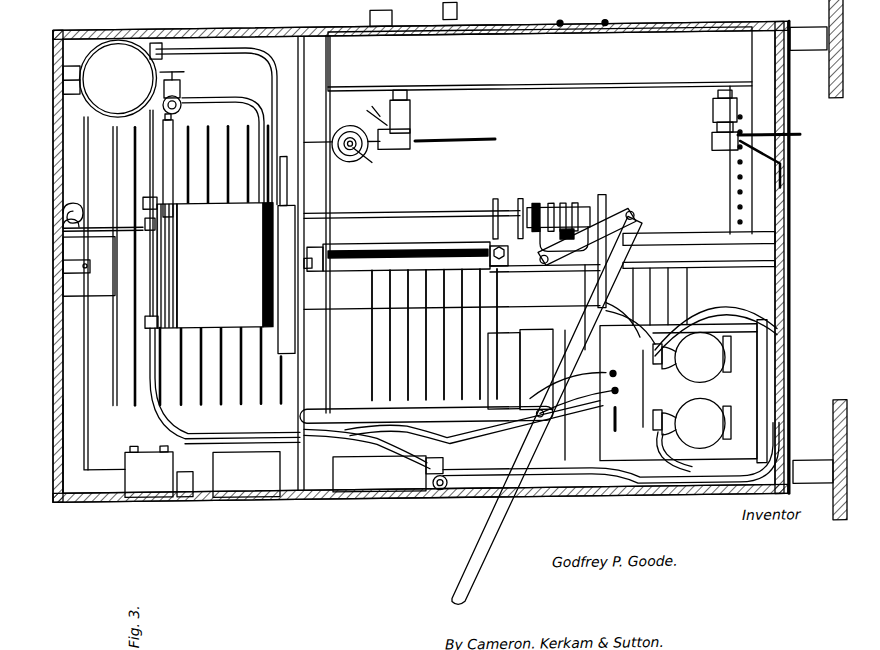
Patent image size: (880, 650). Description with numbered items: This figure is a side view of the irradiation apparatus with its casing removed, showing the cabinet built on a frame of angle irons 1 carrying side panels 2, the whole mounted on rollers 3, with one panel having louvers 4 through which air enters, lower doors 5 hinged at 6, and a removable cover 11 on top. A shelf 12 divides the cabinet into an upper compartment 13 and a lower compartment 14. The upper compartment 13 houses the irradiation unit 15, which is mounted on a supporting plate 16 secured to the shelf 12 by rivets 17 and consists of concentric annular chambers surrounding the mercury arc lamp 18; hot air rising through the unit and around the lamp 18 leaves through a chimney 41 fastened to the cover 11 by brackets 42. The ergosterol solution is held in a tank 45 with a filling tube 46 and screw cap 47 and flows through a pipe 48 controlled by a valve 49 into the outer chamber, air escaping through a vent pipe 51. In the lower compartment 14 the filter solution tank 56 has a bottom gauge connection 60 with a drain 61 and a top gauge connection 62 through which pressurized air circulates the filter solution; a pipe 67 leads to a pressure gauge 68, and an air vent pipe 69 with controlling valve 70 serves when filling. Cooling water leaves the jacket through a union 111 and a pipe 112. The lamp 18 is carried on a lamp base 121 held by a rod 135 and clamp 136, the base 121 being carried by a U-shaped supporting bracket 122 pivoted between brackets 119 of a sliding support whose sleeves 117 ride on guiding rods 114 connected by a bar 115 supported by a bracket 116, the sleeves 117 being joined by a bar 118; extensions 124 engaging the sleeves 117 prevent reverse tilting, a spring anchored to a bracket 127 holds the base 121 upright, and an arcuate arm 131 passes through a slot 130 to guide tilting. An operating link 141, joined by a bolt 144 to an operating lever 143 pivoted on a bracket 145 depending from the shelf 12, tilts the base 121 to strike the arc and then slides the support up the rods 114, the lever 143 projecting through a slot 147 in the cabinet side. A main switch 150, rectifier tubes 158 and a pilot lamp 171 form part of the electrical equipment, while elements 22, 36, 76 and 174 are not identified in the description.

The angle irons 1 is at (89, 424).
The side panels 2 is at (93, 393).
The rollers 3 is at (806, 60).
The louvers 4 is at (143, 362).
The lower doors 5 is at (616, 12).
The hinge 6 is at (574, 13).
The cover 11 is at (67, 505).
The shelf 12 is at (297, 108).
The upper compartment 13 is at (203, 74).
The lower compartment 14 is at (592, 114).
The irradiation unit 15 is at (221, 214).
The supporting plate 16 is at (300, 30).
The rivets 17 is at (392, 13).
The mercury arc lamp 18 is at (467, 250).
The top fitting 22 is at (458, 10).
The pipe 36 is at (218, 273).
The chimney 41 is at (99, 292).
The brackets 42 is at (76, 297).
The tank 45 is at (102, 108).
The filling tube 46 is at (92, 105).
The screw cap 47 is at (70, 93).
The pipe 48 is at (160, 160).
The valve 49 is at (212, 138).
The vent pipe 51 is at (103, 216).
The tank 56 is at (676, 104).
The bottom gauge connection 60 is at (718, 120).
The drain 61 is at (786, 141).
The top gauge connection 62 is at (399, 120).
The pipe 67 is at (247, 398).
The pressure gauge 68 is at (158, 506).
The air vent pipe 69 is at (490, 142).
The controlling valve 70 is at (349, 150).
The wall 76 is at (281, 209).
The union 111 is at (547, 204).
The pipe 112 is at (228, 506).
The guiding rods 114 is at (452, 243).
The bar 115 is at (567, 213).
The bracket 116 is at (713, 258).
The sleeves 117 is at (519, 370).
The bar 118 is at (573, 204).
The brackets 119 is at (559, 204).
The lamp base 121 is at (557, 204).
The U-shaped supporting bracket 122 is at (604, 306).
The extensions 124 is at (513, 208).
The bracket 127 is at (512, 292).
The slot 130 is at (623, 308).
The arcuate arm 131 is at (541, 369).
The rod 135 is at (493, 208).
The clamp 136 is at (316, 280).
The operating link 141 is at (607, 242).
The operating lever 143 is at (470, 557).
The bolt 144 is at (633, 218).
The bracket 145 is at (380, 416).
The slot 147 is at (594, 505).
The main switch 150 is at (258, 506).
The rectifier tubes 158 is at (696, 374).
The pilot lamp 171 is at (784, 183).
The shelf 174 is at (777, 320).